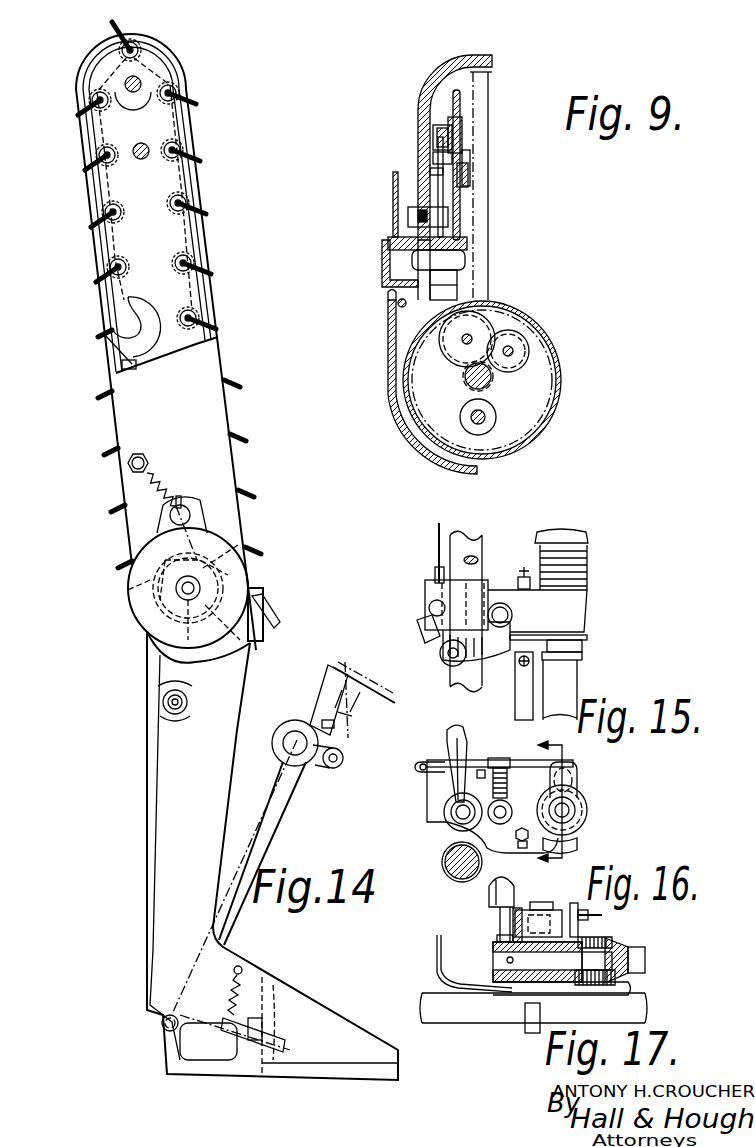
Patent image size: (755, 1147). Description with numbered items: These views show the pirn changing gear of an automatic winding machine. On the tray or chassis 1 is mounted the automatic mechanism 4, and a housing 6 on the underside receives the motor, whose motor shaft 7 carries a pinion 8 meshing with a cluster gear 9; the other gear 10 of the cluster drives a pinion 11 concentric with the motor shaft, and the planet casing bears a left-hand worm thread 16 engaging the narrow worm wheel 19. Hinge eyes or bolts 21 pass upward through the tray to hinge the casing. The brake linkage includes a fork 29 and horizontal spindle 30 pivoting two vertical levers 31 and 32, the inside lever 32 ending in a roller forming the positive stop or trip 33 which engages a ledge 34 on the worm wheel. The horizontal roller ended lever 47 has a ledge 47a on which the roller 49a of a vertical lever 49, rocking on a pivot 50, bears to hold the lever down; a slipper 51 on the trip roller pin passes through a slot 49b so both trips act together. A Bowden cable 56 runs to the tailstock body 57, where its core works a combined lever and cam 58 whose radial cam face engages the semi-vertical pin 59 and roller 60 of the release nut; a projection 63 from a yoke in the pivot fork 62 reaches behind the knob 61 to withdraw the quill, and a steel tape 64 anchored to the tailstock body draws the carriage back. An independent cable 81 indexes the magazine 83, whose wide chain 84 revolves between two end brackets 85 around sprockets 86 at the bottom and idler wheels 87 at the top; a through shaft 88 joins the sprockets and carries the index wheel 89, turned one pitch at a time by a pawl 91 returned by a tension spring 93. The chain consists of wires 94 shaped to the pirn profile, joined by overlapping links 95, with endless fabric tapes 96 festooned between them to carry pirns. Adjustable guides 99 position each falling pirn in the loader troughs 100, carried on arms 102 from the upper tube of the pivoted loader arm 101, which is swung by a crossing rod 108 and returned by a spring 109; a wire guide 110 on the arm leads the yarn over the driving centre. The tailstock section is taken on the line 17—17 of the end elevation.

In FIG. 9, the tray or chassis 1 is at (385, 255).
In FIG. 9, the automatic mechanism 4 is at (430, 74).
In FIG. 9, the housing 6 is at (390, 378).
In FIG. 9, the motor shaft 7 is at (470, 377).
In FIG. 9, the pinion 8 is at (492, 378).
In FIG. 9, the cluster gear 9 is at (490, 322).
In FIG. 9, the gear of the cluster 10 is at (480, 334).
In FIG. 9, the pinion 11 is at (490, 388).
In FIG. 9, the left-hand worm thread 16 is at (535, 433).
In FIG. 9, the worm wheel 19 is at (490, 80).
In FIG. 9, the hinge eyes or bolts 21 is at (397, 303).
In FIG. 9, the fork 29 is at (470, 260).
In FIG. 9, the spindle 30 is at (462, 247).
In FIG. 9, the vertical lever 31 is at (394, 222).
In FIG. 9, the inside lever 32 is at (465, 236).
In FIG. 9, the positive stop or trip 33 is at (470, 183).
In FIG. 9, the face or ledge 34 is at (470, 148).
In FIG. 9, the horizontal roller ended lever 47 is at (461, 122).
In FIG. 9, the ledge 47a is at (462, 150).
In FIG. 9, the vertical lever 49 is at (440, 195).
In FIG. 9, the roller 49a is at (438, 130).
In FIG. 9, the slot 49b is at (440, 156).
In FIG. 9, the pivot 50 is at (446, 217).
In FIG. 9, the slipper 51 is at (432, 172).
In FIG. 15, the Bowden type remote control cable 56 is at (437, 530).
In FIG. 17, the Bowden type remote control cable 56 is at (604, 915).
In FIG. 15, the tailstock body 57 is at (432, 598).
In FIG. 16, the tailstock body 57 is at (447, 820).
In FIG. 15, the combined lever and cam 58 is at (555, 605).
In FIG. 16, the combined lever and cam 58 is at (478, 760).
In FIG. 17, the combined lever and cam 58 is at (528, 908).
In FIG. 15, the semi-vertical pin 59 is at (449, 660).
In FIG. 16, the semi-vertical pin 59 is at (452, 728).
In FIG. 17, the semi-vertical pin 59 is at (497, 894).
In FIG. 16, the roller 60 is at (450, 774).
In FIG. 17, the roller 60 is at (498, 920).
In FIG. 15, the knob 61 is at (578, 660).
In FIG. 16, the knob 61 is at (588, 806).
In FIG. 17, the knob 61 is at (440, 968).
In FIG. 15, the pivot fork 62 is at (580, 646).
In FIG. 16, the pivot fork 62 is at (577, 817).
In FIG. 17, the pivot fork 62 is at (508, 985).
In FIG. 15, the projection 63 is at (585, 636).
In FIG. 16, the projection 63 is at (578, 774).
In FIG. 17, the projection 63 is at (512, 932).
In FIG. 15, the steel tape 64 is at (516, 702).
In FIG. 16, the steel tape 64 is at (578, 845).
In FIG. 17, the steel tape 64 is at (533, 1013).
In FIG. 14, the cable 81 is at (278, 624).
In FIG. 14, the magazine 83 is at (209, 404).
In FIG. 14, the wide chain 84 is at (178, 188).
In FIG. 14, the end brackets 85 is at (196, 826).
In FIG. 14, the sprockets 86 is at (252, 641).
In FIG. 14, the idler wheels 87 is at (160, 66).
In FIG. 14, the through shaft 88 is at (178, 593).
In FIG. 14, the index wheel 89 is at (212, 548).
In FIG. 14, the pawl 91 is at (225, 578).
In FIG. 14, the tension spring 93 is at (158, 481).
In FIG. 14, the wires 94 is at (216, 328).
In FIG. 14, the overlapping links 95 is at (195, 302).
In FIG. 14, the flexible endless fabric tapes 96 is at (186, 180).
In FIG. 14, the adjustable guides 99 is at (360, 685).
In FIG. 14, the loader troughs 100 is at (345, 720).
In FIG. 14, the tubular frame or arm 101 is at (255, 842).
In FIG. 14, the arms 102 is at (342, 752).
In FIG. 14, the rod 108 is at (290, 1046).
In FIG. 14, the spring 109 is at (242, 976).
In FIG. 14, the wire guide 110 is at (322, 702).
In FIG. 16, the section line 17 is at (558, 804).